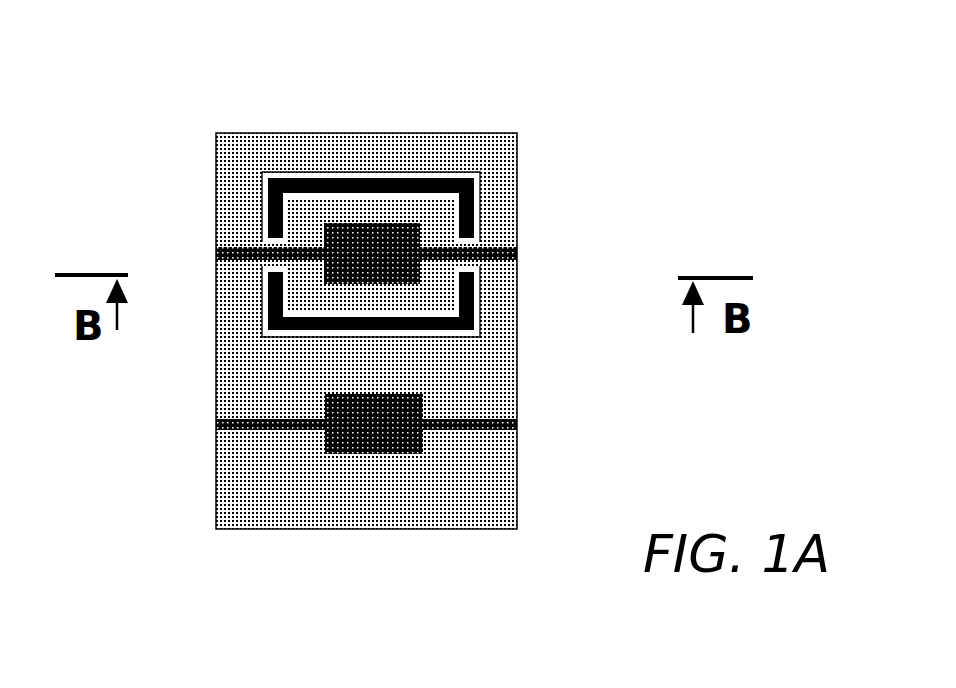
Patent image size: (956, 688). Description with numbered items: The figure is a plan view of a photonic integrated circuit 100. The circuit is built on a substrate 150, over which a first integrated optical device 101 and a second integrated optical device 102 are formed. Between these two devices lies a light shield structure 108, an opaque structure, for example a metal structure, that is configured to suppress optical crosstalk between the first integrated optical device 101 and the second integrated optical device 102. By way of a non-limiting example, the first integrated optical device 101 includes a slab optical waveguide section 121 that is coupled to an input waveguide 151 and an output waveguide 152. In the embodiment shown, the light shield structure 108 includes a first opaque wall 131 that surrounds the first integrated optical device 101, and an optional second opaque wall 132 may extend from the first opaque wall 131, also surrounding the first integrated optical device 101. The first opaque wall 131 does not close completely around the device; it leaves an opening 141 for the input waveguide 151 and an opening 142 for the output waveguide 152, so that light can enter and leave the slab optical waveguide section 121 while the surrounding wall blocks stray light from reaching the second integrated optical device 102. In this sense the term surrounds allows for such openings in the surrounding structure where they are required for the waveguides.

The photonic integrated circuit 100 is at (510, 36).
The first integrated optical device 101 is at (309, 211).
The second integrated optical device 102 is at (444, 452).
The light shield structure 108 is at (389, 157).
The slab optical waveguide section 121 is at (416, 222).
The first opaque wall 131 is at (420, 174).
The second opaque wall 132 is at (282, 337).
The opening 141 is at (267, 240).
The opening 142 is at (489, 237).
The substrate 150 is at (265, 530).
The input waveguide 151 is at (240, 261).
The output waveguide 152 is at (485, 261).